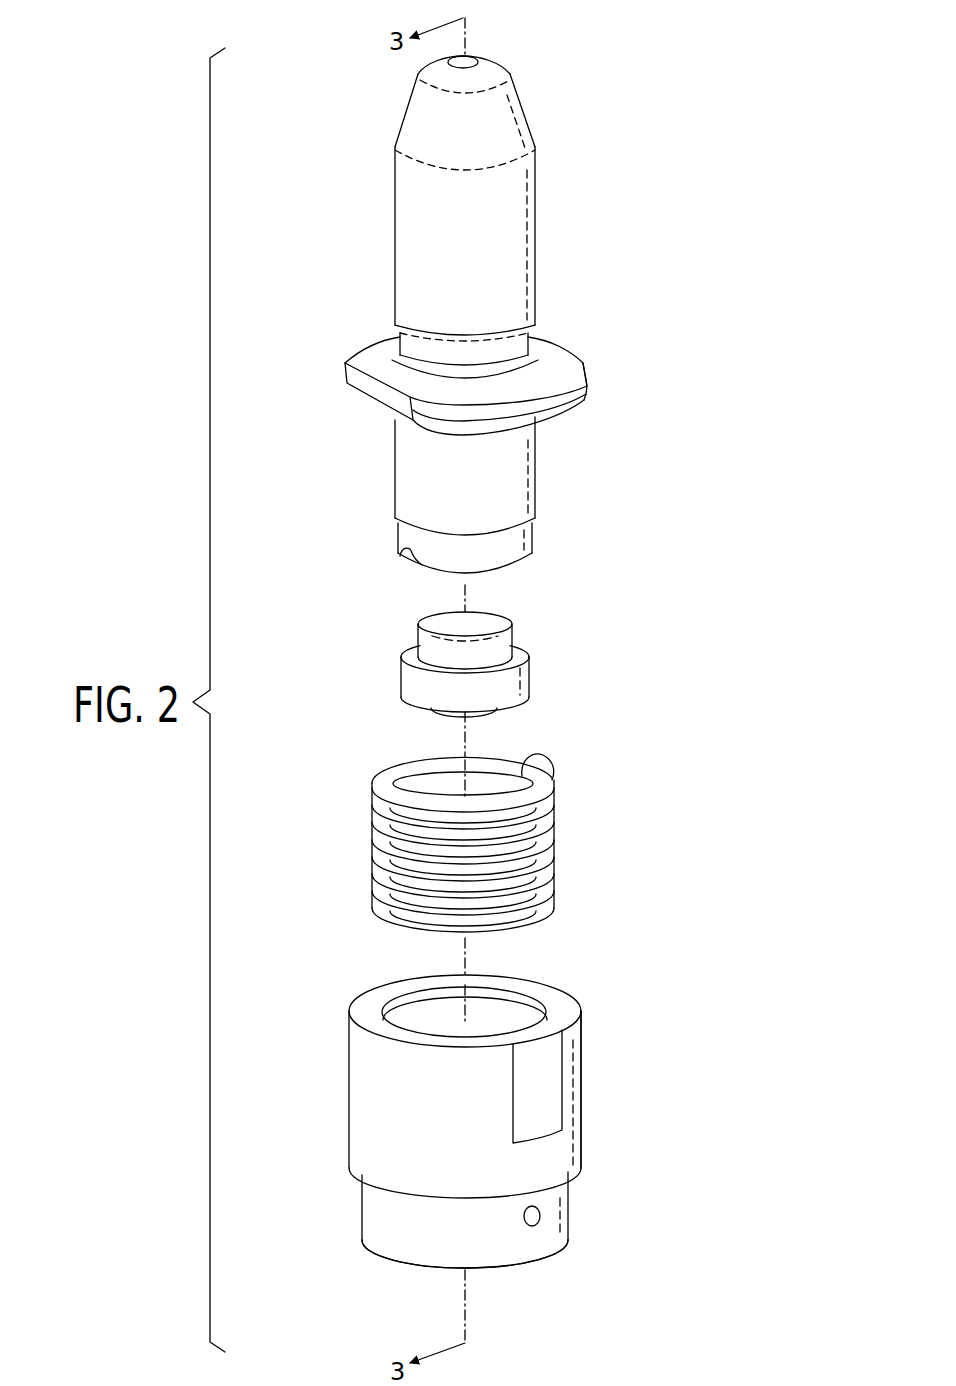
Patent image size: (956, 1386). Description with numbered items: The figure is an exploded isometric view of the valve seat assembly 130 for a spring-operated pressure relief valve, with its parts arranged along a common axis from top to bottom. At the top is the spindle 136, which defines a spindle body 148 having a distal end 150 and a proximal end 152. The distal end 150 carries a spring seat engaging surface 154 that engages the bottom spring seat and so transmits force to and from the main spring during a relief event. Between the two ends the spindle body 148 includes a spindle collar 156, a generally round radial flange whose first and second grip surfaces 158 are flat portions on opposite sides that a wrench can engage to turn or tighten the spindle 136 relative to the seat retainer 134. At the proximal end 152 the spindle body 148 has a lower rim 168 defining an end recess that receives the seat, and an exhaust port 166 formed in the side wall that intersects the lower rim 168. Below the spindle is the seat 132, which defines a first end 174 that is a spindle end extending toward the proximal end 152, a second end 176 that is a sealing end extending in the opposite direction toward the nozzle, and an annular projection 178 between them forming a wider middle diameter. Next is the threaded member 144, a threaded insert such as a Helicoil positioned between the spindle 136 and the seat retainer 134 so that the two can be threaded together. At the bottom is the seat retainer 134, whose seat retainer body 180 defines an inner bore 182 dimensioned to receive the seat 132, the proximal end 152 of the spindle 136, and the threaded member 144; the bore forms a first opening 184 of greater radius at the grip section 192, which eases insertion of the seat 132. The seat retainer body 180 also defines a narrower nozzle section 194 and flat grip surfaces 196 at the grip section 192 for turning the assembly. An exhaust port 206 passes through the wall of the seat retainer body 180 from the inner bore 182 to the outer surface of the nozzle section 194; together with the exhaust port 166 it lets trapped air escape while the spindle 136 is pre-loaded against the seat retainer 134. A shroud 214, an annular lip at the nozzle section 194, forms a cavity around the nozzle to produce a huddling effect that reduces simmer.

The valve seat assembly 130 is at (307, 212).
The seat 132 is at (385, 698).
The seat retainer 134 is at (344, 1090).
The spindle 136 is at (372, 226).
The threaded member 144 is at (540, 846).
The spindle body 148 is at (518, 195).
The distal end 150 is at (490, 35).
The proximal end 152 is at (533, 568).
The spring seat engaging surface 154 is at (477, 61).
The spindle collar 156 is at (554, 406).
The grip surfaces 158 is at (554, 349).
The exhaust port 166 is at (398, 552).
The lower rim 168 is at (447, 576).
The first end 174 is at (494, 650).
The second end 176 is at (440, 718).
The annular projection 178 is at (408, 658).
The seat retainer body 180 is at (582, 1122).
The inner bore 182 is at (428, 1018).
The first opening 184 is at (530, 995).
The grip section 192 is at (363, 1155).
The nozzle section 194 is at (375, 1228).
The grip surfaces 196 is at (548, 1085).
The exhaust port 206 is at (539, 1225).
The shroud 214 is at (408, 1268).